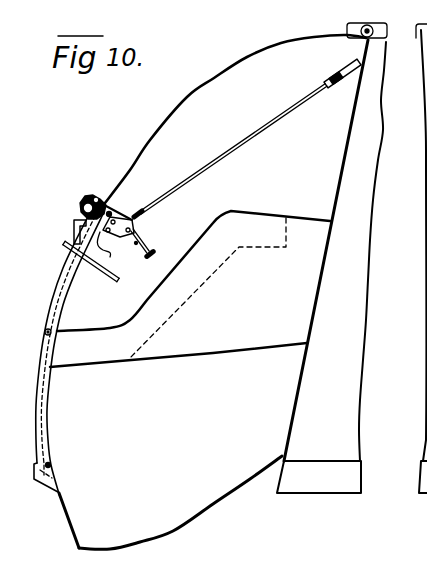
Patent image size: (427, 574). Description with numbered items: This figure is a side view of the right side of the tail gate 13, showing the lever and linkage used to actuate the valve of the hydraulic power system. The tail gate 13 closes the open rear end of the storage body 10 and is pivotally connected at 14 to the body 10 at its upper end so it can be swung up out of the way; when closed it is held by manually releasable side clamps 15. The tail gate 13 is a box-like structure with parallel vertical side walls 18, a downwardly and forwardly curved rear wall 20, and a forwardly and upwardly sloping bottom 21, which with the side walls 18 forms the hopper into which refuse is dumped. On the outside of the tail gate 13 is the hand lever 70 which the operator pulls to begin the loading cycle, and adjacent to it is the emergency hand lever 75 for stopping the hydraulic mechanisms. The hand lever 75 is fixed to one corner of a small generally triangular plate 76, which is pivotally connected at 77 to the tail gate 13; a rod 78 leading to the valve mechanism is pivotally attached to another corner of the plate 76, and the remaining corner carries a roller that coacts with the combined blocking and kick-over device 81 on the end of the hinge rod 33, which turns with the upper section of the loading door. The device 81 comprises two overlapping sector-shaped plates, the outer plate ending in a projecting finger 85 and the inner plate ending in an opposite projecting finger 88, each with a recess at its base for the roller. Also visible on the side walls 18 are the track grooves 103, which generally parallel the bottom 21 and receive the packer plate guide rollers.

The storage body 10 is at (364, 355).
The tail gate 13 is at (159, 122).
The pivotal connection 14 is at (362, 25).
The side clamps 15 is at (292, 43).
The side walls 18 is at (247, 189).
The rear wall 20 is at (46, 298).
The bottom 21 is at (167, 534).
The hinge rod 33 is at (79, 204).
The hand lever 70 is at (108, 281).
The hand lever 75 is at (143, 239).
The triangular plate 76 is at (135, 222).
The pivotal connection 77 is at (137, 245).
The rod 78 is at (241, 140).
The combined blocking and kick-over device 81 is at (110, 212).
The projecting finger 85 is at (75, 231).
The projecting finger 88 is at (114, 251).
The track grooves 103 is at (264, 232).